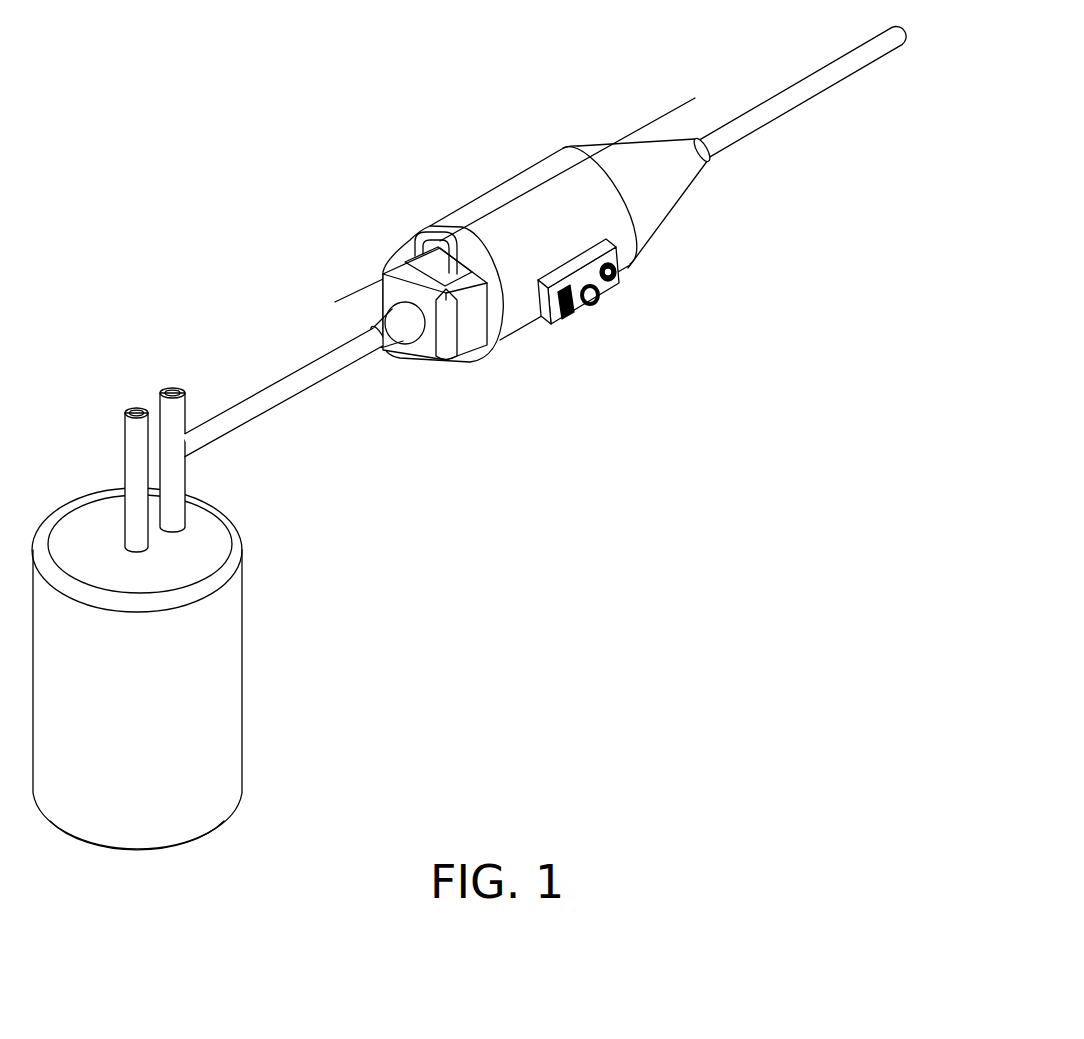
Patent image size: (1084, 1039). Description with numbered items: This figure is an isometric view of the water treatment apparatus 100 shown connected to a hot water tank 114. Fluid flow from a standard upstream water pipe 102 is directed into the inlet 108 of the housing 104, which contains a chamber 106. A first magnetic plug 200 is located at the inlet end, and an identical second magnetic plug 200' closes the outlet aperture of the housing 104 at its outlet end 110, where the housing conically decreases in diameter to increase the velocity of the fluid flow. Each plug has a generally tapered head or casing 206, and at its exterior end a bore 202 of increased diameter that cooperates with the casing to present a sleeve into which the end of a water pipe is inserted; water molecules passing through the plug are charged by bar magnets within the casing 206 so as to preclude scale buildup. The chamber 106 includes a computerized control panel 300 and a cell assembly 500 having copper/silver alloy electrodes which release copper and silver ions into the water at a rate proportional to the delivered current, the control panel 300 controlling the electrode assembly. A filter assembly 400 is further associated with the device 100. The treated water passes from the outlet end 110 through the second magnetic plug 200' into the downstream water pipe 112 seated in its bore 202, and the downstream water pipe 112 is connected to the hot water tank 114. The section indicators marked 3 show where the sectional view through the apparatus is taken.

The water treatment apparatus 100 is at (310, 74).
The upstream water pipe 102 is at (855, 66).
The housing 104 is at (464, 120).
The chamber 106 is at (472, 208).
The inlet 108 is at (672, 198).
The outlet end 110 is at (400, 333).
The downstream water pipe 112 is at (235, 418).
The hot water tank 114 is at (212, 723).
The first magnetic plug 200 is at (834, 186).
The second magnetic plug 200' is at (263, 302).
The bore 202 is at (380, 344).
The casing 206 is at (710, 158).
The control panel 300 is at (573, 313).
The filter assembly 400 is at (467, 330).
The cell assembly 500 is at (620, 287).
The section line 3- 3 is at (731, 120).